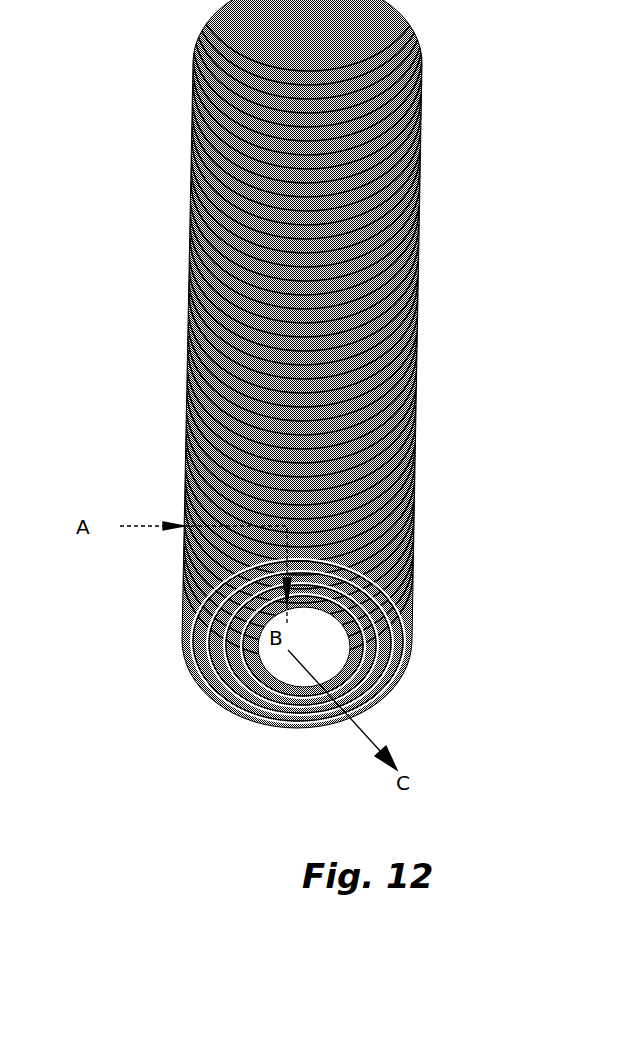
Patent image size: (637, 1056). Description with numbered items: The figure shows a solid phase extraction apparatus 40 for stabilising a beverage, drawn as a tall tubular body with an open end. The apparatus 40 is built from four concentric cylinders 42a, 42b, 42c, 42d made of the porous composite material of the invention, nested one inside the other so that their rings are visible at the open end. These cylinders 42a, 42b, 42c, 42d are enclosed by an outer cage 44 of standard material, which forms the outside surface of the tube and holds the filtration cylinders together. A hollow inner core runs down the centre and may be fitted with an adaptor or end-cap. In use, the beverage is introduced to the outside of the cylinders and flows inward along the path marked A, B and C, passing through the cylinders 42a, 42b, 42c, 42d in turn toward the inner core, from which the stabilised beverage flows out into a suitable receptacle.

The solid phase extraction apparatus 40 is at (288, 364).
The outer cage 44 is at (186, 367).
The concentric cylinder 42a is at (410, 590).
The concentric cylinder 42b is at (408, 620).
The concentric cylinder 42c is at (408, 657).
The concentric cylinder 42d is at (392, 693).